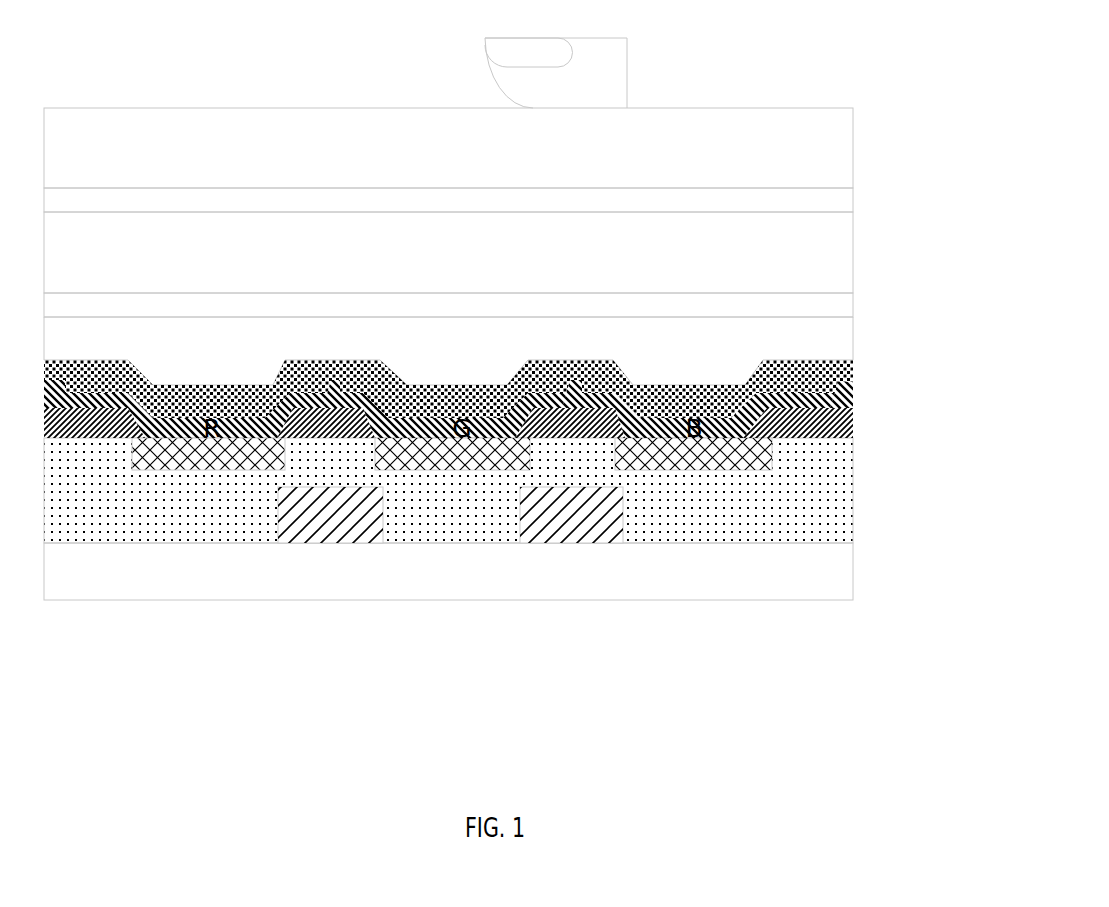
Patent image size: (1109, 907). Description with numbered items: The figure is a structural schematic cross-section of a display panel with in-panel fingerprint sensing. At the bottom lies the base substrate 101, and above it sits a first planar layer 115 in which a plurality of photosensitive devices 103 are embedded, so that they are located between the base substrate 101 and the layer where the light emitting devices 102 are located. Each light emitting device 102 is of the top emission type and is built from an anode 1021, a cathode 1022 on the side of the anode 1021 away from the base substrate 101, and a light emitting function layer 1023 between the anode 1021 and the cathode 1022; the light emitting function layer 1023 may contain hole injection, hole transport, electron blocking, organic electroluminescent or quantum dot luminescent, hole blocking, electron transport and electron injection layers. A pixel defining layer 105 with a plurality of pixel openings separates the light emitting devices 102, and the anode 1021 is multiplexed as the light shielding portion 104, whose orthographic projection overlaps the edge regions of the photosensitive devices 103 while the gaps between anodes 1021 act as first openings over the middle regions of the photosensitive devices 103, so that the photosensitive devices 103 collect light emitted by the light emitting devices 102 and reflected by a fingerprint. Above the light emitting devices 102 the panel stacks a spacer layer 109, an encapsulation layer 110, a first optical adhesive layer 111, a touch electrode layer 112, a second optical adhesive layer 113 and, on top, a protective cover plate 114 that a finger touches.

The base substrate 101 is at (848, 567).
The light emitting device 102 is at (444, 571).
The anode 1021 is at (208, 470).
The cathode 1022 is at (257, 418).
The light emitting function layer 1023 is at (155, 418).
The photosensitive device 103 is at (332, 503).
The light shielding portion 104 is at (209, 561).
The pixel defining layer 105 is at (853, 422).
The spacer layer 109 is at (853, 393).
The encapsulation layer 110 is at (835, 334).
The first optical adhesive layer 111 is at (835, 302).
The touch electrode layer 112 is at (835, 252).
The second optical adhesive layer 113 is at (835, 200).
The protective cover plate 114 is at (835, 149).
The first planar layer 115 is at (837, 492).